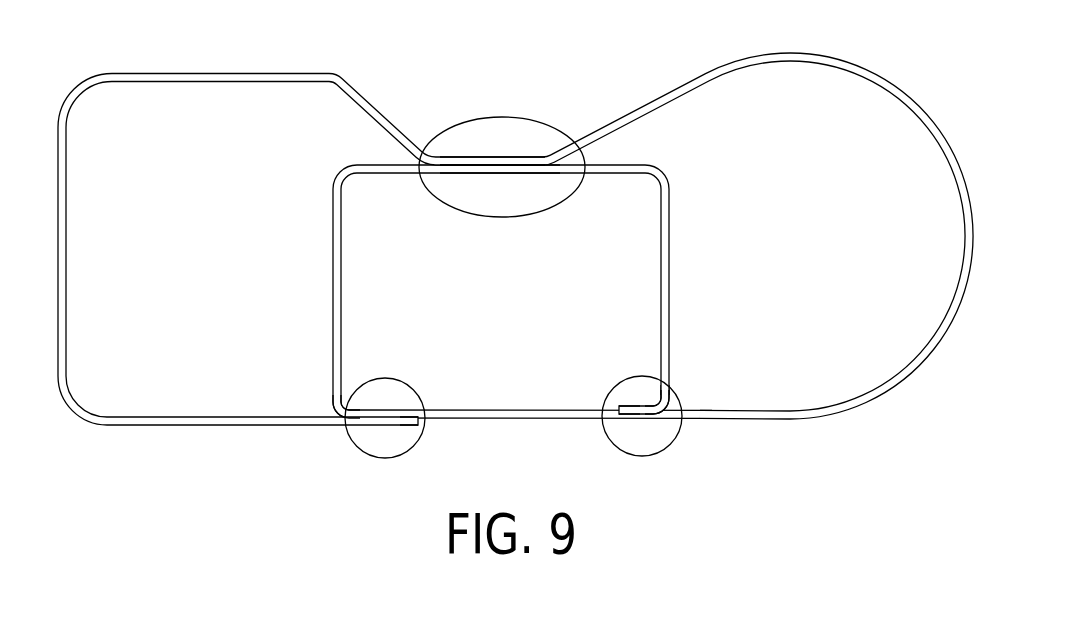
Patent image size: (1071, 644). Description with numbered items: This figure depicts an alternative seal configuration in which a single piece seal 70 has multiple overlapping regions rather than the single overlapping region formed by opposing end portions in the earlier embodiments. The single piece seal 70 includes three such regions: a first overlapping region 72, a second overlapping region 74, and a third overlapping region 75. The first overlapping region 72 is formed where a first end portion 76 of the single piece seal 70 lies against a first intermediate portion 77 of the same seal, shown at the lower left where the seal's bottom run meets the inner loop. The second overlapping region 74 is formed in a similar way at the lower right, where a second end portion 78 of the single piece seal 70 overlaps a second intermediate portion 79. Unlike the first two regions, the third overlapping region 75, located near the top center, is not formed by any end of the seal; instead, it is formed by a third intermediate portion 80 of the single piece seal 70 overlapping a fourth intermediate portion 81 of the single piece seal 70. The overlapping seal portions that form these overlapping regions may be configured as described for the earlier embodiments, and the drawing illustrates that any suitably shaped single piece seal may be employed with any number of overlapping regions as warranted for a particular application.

The single piece seal 70 is at (248, 447).
The first overlapping region 72 is at (410, 382).
The second overlapping region 74 is at (617, 447).
The third overlapping region 75 is at (522, 117).
The first end portion 76 is at (388, 423).
The first intermediate portion 77 is at (385, 410).
The second end portion 78 is at (633, 407).
The second intermediate portion 79 is at (652, 423).
The third intermediate portion 80 is at (466, 160).
The fourth intermediate portion 81 is at (497, 173).